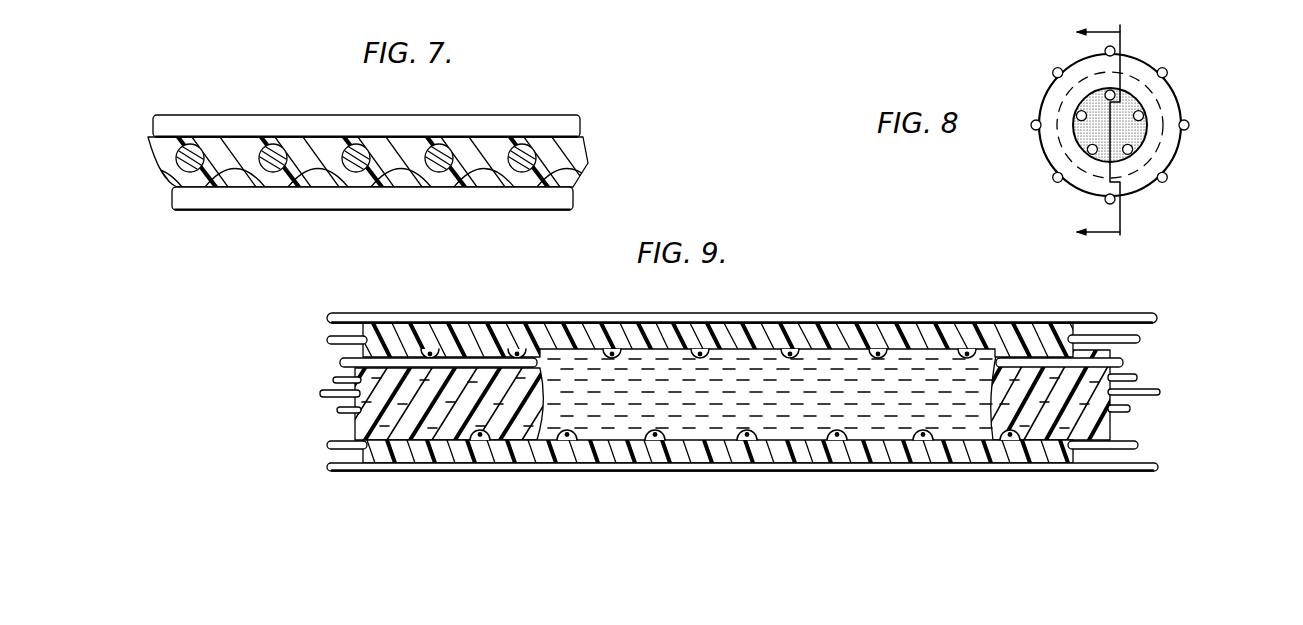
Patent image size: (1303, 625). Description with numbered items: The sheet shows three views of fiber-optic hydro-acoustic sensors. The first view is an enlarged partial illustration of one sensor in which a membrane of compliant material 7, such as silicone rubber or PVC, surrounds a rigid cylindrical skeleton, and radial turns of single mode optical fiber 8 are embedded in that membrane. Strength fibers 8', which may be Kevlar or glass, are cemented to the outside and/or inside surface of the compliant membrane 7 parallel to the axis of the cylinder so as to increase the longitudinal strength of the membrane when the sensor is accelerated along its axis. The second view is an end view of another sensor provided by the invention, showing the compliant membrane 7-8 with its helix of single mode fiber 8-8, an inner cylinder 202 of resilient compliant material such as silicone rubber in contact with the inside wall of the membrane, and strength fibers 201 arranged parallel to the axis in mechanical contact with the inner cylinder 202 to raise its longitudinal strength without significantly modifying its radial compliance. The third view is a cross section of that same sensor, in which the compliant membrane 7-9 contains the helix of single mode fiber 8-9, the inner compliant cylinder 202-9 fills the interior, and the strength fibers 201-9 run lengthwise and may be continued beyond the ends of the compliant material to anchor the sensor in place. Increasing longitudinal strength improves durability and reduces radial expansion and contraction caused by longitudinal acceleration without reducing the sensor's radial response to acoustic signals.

In FIG. 7, the compliant membrane 7 is at (502, 150).
In FIG. 7, the single mode optical fiber 8 is at (363, 138).
In FIG. 7, the strength fibers 8' is at (366, 166).
In FIG. 8, the compliant membrane 7-8 is at (1047, 160).
In FIG. 8, the single mode fiber helix 8-8 is at (1087, 72).
In FIG. 8, the strength fibers 201 is at (1197, 125).
In FIG. 8, the inner cylinder 202 is at (1147, 97).
In FIG. 9, the strength fibers 201-9 is at (320, 338).
In FIG. 9, the inner compliant cylinder 202-9 is at (353, 430).
In FIG. 9, the compliant membrane 7-9 is at (547, 334).
In FIG. 9, the single mode fiber helix 8-9 is at (522, 343).